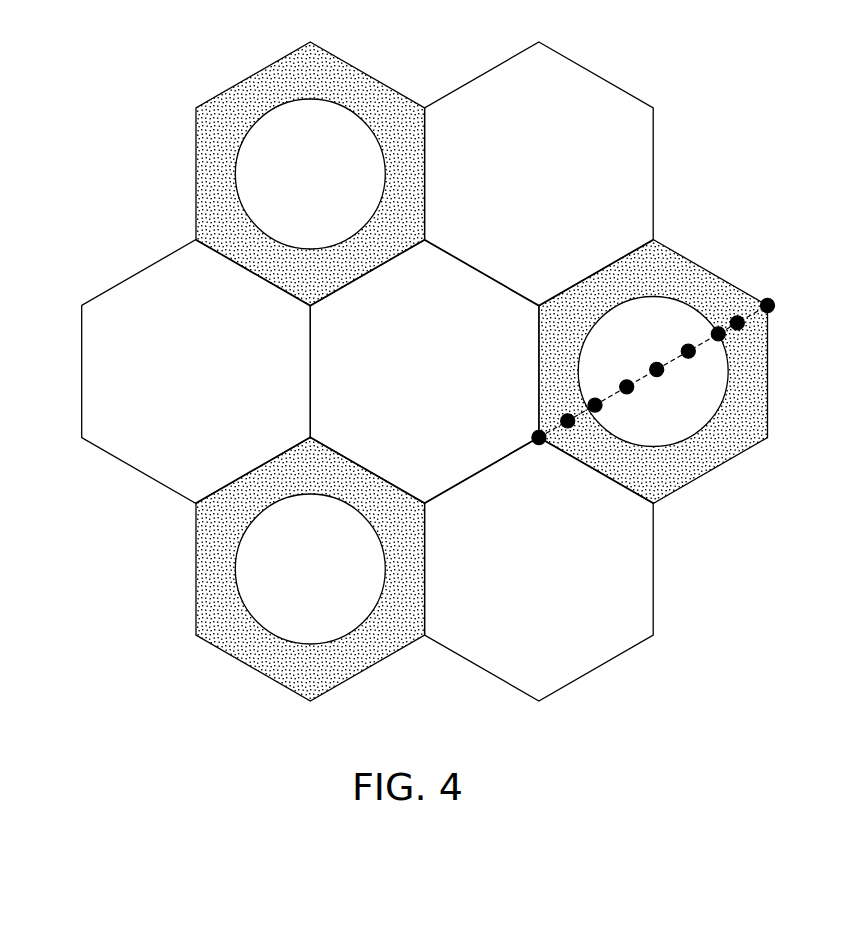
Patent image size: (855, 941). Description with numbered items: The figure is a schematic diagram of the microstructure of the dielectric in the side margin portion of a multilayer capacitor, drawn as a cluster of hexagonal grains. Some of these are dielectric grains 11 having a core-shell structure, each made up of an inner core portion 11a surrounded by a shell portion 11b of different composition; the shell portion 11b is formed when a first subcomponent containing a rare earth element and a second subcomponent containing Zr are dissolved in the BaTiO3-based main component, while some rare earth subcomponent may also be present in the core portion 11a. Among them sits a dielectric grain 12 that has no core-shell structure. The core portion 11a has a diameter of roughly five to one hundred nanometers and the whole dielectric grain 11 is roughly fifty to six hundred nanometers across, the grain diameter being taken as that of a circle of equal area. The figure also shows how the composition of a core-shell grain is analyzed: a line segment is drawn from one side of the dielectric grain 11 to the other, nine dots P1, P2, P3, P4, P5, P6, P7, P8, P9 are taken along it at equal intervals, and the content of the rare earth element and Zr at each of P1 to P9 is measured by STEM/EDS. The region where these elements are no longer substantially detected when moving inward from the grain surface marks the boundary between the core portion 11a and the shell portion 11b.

The dielectric grain 11 is at (248, 174).
The core portion 11a is at (258, 145).
The shell portion 11b is at (208, 183).
The dielectric grain 12 is at (93, 373).
The dot P1 is at (534, 451).
The dot P2 is at (563, 411).
The dot P3 is at (606, 414).
The dot P4 is at (621, 377).
The dot P5 is at (664, 382).
The dot P6 is at (681, 342).
The dot P7 is at (723, 345).
The dot P8 is at (730, 312).
The dot P9 is at (781, 306).